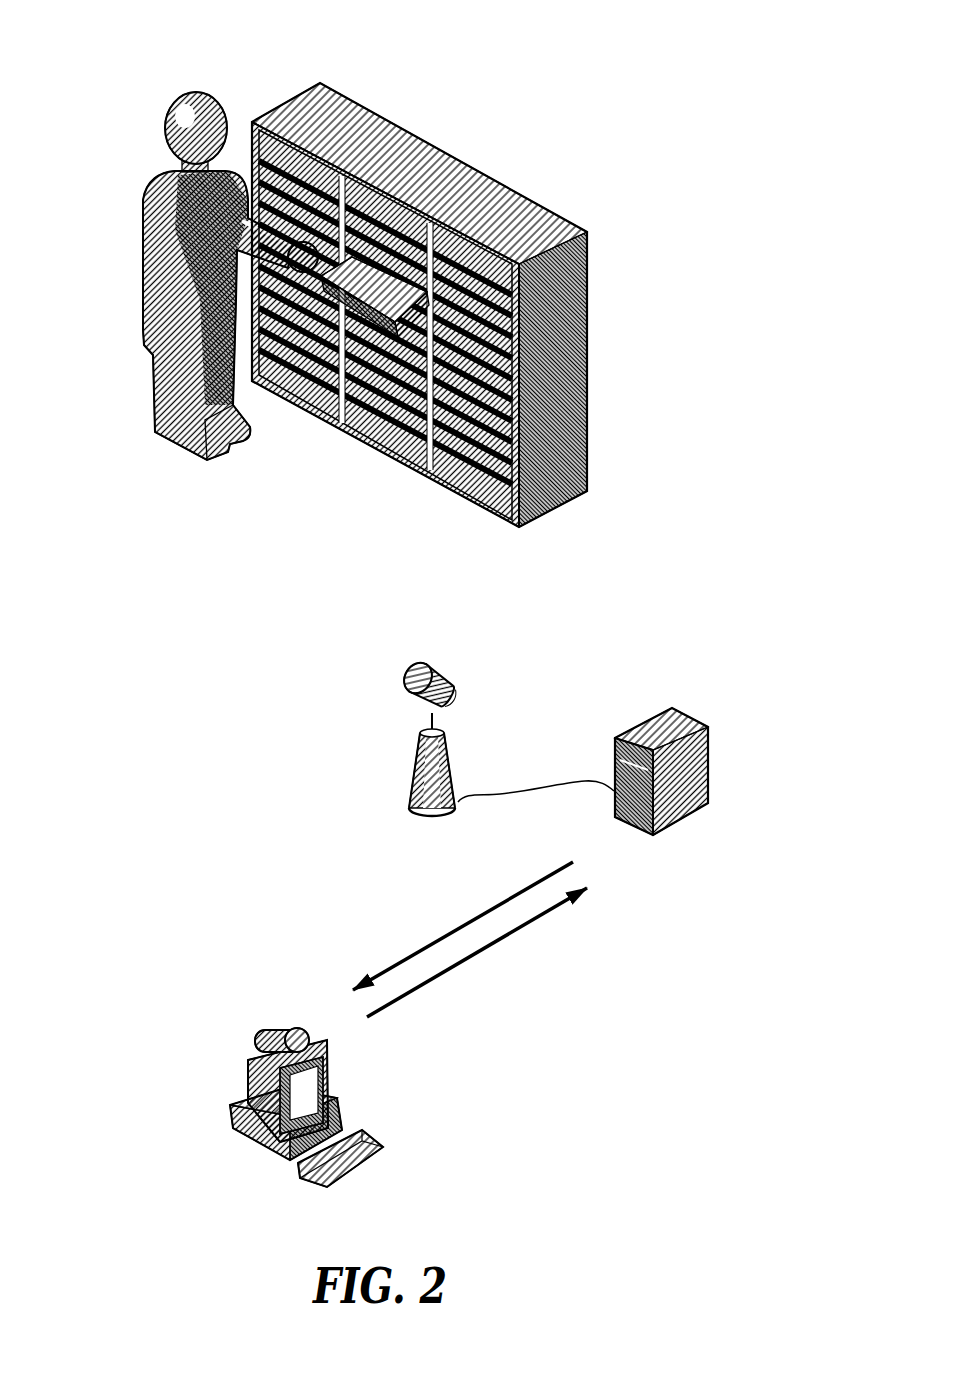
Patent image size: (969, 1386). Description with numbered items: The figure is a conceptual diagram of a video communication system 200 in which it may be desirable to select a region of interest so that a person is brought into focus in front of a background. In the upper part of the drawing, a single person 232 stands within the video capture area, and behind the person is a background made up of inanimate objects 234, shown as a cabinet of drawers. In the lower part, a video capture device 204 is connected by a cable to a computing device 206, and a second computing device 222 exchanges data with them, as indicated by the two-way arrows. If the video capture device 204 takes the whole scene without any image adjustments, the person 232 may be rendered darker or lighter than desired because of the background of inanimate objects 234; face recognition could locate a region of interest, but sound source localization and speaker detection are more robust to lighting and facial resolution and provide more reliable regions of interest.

The system 200 is at (727, 53).
The person 232 is at (175, 92).
The inanimate objects 234 is at (373, 68).
The video capture device 204 is at (438, 827).
The computing device 206 is at (645, 707).
The computing device 222 is at (308, 1002).